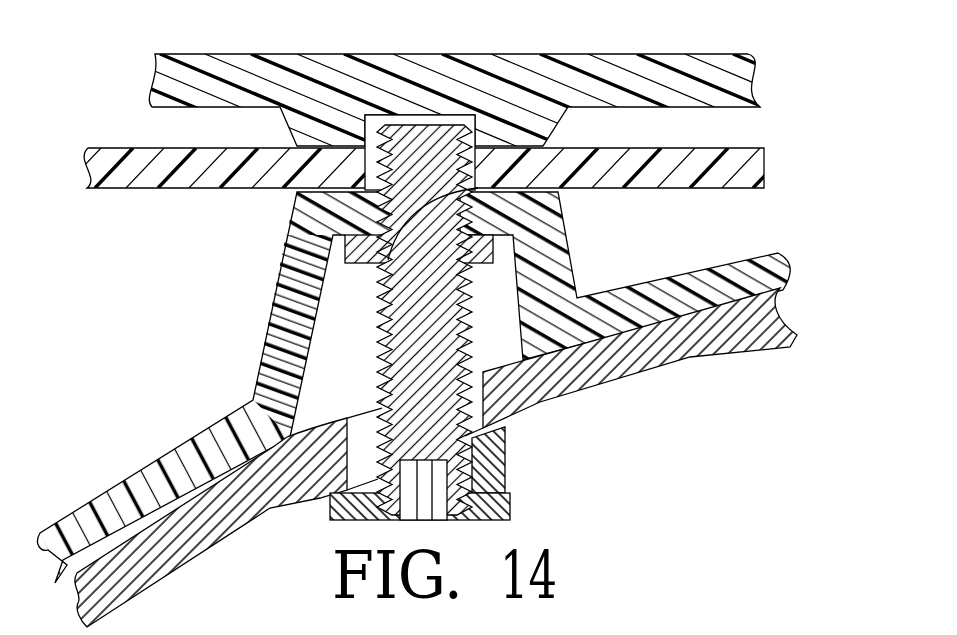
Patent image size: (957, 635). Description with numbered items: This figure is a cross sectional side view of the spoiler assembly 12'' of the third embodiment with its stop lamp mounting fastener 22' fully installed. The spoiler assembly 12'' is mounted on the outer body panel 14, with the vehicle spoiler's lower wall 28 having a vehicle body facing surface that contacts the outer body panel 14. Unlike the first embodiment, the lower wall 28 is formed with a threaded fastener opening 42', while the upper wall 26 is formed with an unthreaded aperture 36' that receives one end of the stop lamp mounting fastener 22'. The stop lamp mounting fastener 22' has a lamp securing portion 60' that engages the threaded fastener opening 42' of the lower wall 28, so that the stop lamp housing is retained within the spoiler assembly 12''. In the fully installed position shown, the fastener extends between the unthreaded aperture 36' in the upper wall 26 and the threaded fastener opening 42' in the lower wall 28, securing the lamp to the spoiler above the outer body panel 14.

The spoiler assembly 12'' is at (476, 313).
The upper wall 26 is at (723, 95).
The unthreaded aperture 36' is at (345, 152).
The lower wall 28 is at (690, 283).
The outer body panel 14 is at (650, 360).
The threaded fastener opening 42' is at (416, 267).
The stop lamp mounting fastener 22' is at (455, 322).
The lamp securing portion 60' is at (354, 224).